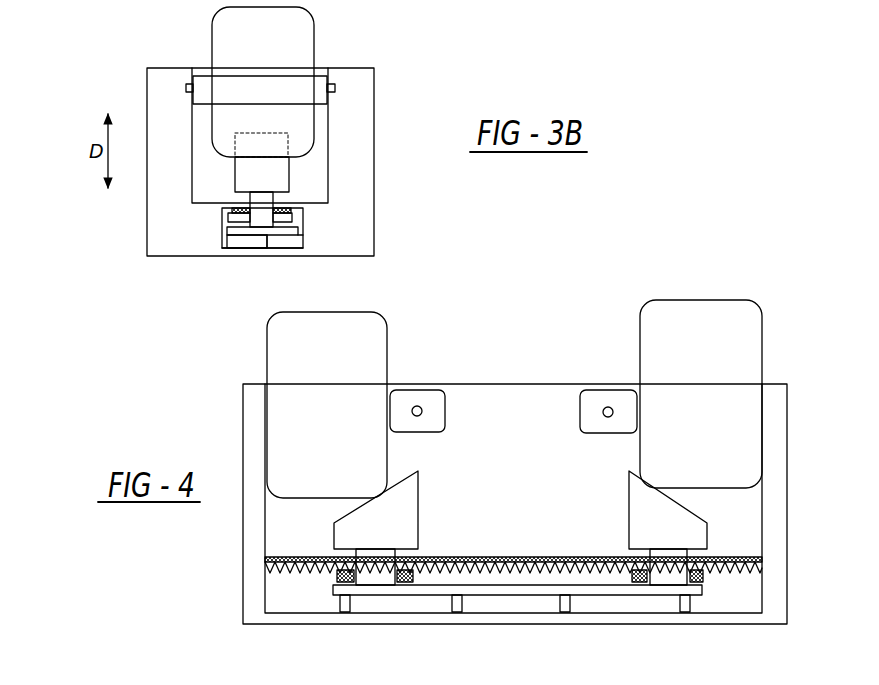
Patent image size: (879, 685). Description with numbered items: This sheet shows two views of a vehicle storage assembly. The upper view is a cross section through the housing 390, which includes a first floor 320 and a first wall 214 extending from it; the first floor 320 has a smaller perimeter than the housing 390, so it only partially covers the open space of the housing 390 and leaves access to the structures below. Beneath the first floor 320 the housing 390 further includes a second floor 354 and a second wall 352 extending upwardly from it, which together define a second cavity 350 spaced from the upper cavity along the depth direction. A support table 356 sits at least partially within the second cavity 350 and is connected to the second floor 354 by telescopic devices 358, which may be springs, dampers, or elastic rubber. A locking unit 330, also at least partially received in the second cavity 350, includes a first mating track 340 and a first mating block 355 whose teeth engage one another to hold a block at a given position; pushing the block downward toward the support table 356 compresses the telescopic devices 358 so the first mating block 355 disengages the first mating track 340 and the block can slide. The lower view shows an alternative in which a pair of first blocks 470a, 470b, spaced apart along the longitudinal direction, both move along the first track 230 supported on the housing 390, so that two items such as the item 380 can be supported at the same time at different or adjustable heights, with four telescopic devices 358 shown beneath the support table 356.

In FIG. 3B, the first wall 214 is at (331, 116).
In FIG. 4, the first track 230 is at (469, 554).
In FIG. 3B, the first floor 320 is at (322, 203).
In FIG. 3B, the locking unit 330 is at (176, 215).
In FIG. 3B, the first mating track 340 is at (220, 217).
In FIG. 3B, the second cavity 350 is at (236, 242).
In FIG. 3B, the second wall 352 is at (219, 218).
In FIG. 3B, the second floor 354 is at (283, 249).
In FIG. 3B, the first mating block 355 is at (295, 207).
In FIG. 3B, the support table 356 is at (301, 232).
In FIG. 3B, the telescopic device 358 is at (258, 239).
In FIG. 4, the telescopic device 358 is at (347, 604).
In FIG. 4, the item 380 is at (342, 410).
In FIG. 3B, the housing 390 is at (377, 107).
In FIG. 4, the first block 470a is at (407, 538).
In FIG. 4, the first block 470b is at (683, 540).